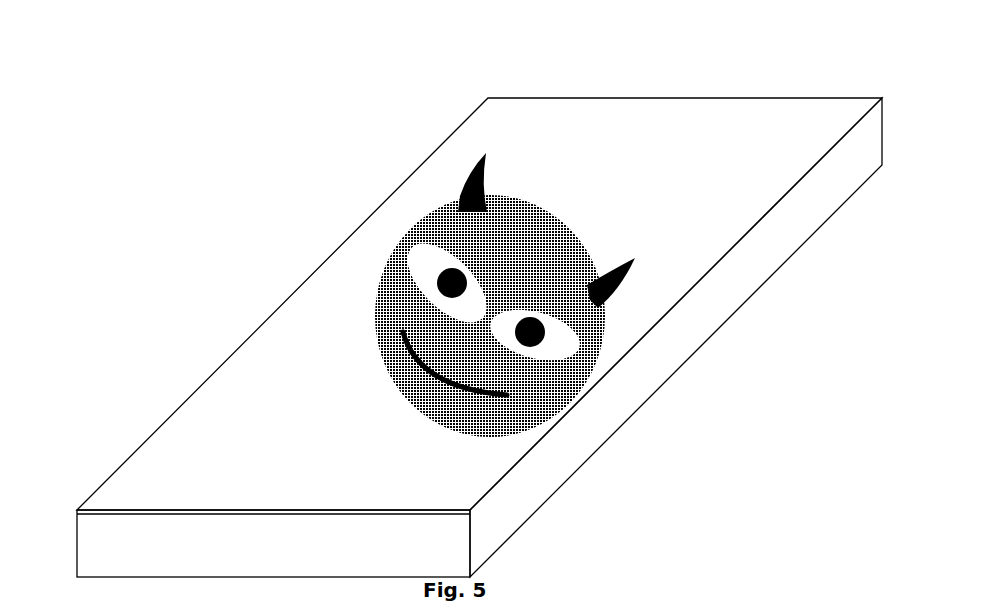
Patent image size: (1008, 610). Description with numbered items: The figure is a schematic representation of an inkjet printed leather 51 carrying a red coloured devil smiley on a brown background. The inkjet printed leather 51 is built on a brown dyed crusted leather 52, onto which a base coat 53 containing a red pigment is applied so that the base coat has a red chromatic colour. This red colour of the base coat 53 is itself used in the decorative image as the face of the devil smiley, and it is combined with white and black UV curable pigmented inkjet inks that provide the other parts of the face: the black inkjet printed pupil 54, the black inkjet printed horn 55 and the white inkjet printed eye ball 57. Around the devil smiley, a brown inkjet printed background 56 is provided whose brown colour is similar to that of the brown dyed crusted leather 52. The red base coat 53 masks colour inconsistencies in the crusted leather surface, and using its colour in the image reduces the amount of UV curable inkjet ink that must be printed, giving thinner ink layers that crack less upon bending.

The inkjet printed leather 51 is at (258, 295).
The brown dyed crusted leather 52 is at (602, 422).
The base coat 53 is at (437, 230).
The black inkjet printed pupil 54 is at (450, 283).
The black inkjet printed horn 55 is at (482, 180).
The brown inkjet printed background 56 is at (250, 370).
The white inkjet printed eye ball 57 is at (564, 327).